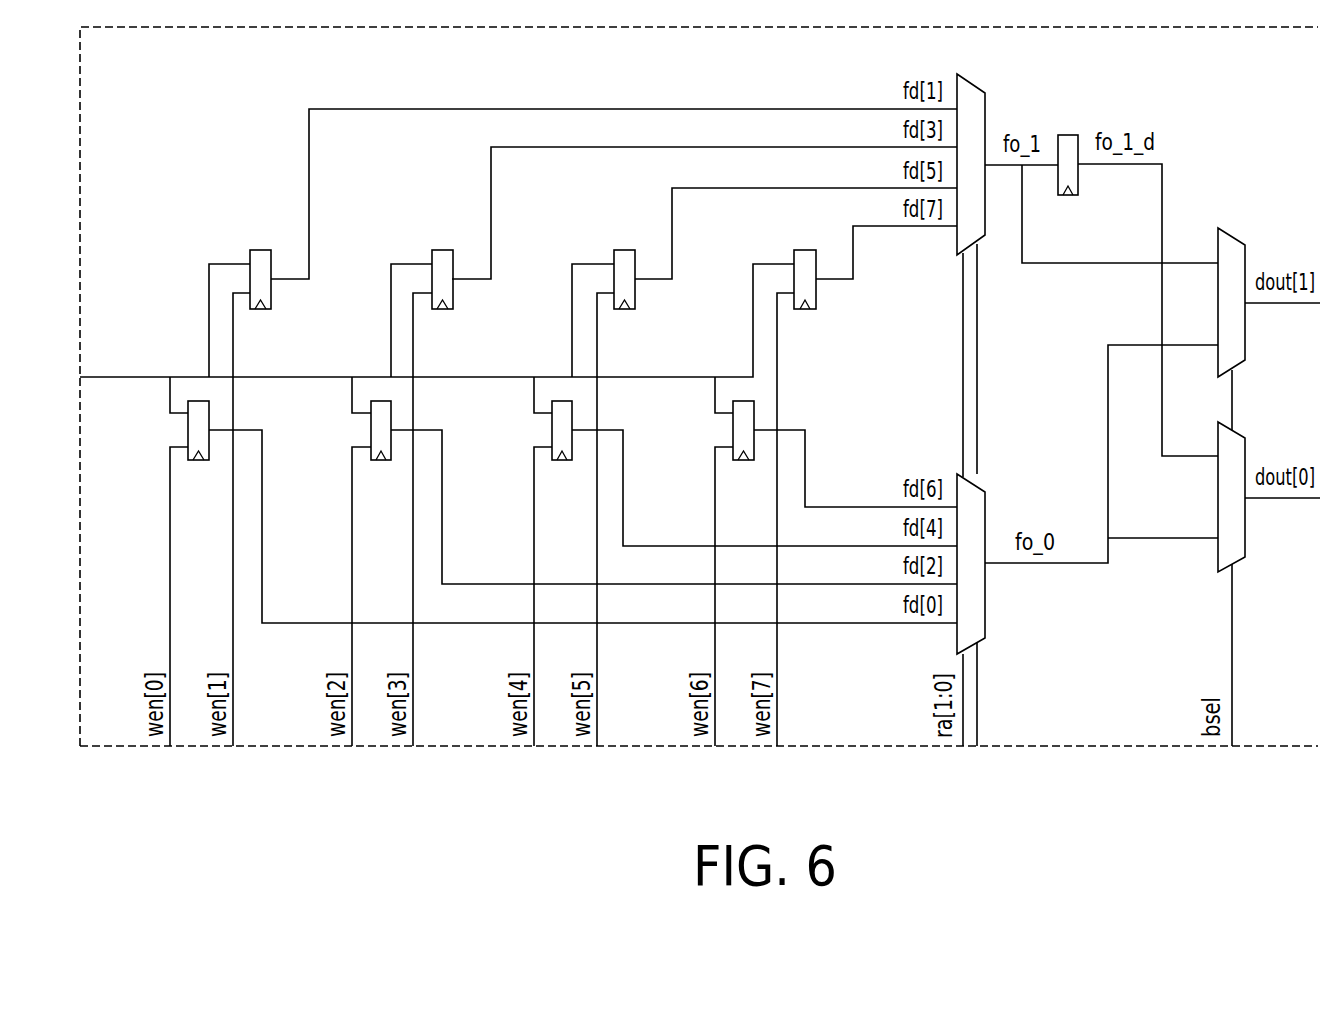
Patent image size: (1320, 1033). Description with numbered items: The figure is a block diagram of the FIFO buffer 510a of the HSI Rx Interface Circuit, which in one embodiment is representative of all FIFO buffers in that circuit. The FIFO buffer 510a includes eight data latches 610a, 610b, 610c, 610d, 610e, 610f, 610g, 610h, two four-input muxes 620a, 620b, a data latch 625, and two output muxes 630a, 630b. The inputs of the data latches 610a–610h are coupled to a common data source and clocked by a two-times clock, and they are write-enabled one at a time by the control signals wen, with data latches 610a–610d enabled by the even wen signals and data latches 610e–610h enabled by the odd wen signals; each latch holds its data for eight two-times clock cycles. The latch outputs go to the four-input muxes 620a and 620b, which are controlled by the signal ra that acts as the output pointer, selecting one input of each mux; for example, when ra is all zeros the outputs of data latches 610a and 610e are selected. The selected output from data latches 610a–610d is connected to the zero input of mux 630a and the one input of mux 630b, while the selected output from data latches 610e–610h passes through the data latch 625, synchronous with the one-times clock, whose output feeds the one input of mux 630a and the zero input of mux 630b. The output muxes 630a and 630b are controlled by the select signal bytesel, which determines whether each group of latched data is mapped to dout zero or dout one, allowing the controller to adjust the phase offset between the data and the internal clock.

The FIFO buffer 510a is at (788, 812).
The data latch 610a is at (156, 449).
The data latch 610b is at (340, 449).
The data latch 610c is at (521, 449).
The data latch 610d is at (701, 449).
The data latch 610e is at (301, 302).
The data latch 610f is at (484, 303).
The data latch 610g is at (665, 303).
The data latch 610h is at (845, 303).
The 4-input mux 620a is at (1002, 528).
The 4-input mux 620b is at (1003, 202).
The data latch 625 is at (1068, 149).
The output mux 630a is at (1263, 531).
The output mux 630b is at (1264, 267).